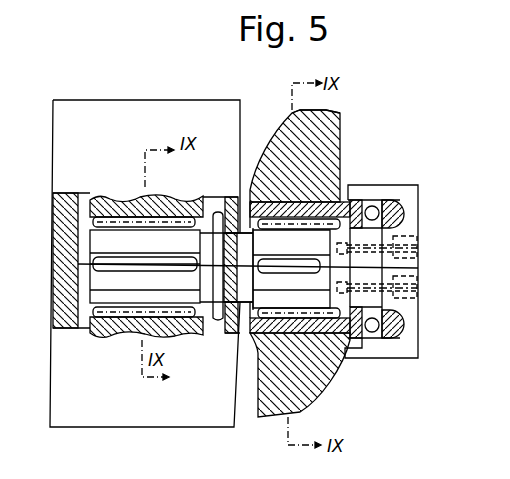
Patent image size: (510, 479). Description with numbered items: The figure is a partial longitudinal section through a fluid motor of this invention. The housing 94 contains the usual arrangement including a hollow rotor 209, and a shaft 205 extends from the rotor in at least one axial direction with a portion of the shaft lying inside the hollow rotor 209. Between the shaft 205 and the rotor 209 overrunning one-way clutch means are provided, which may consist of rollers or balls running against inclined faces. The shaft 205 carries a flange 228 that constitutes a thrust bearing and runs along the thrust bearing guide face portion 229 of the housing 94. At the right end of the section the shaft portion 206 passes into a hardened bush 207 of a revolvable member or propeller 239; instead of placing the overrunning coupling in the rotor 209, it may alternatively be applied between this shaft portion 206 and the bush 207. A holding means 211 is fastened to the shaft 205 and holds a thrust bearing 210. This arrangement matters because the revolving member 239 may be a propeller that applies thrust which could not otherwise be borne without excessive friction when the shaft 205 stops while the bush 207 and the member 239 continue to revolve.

The housing 94 is at (80, 152).
The shaft 205 is at (132, 297).
The shaft portion 206 is at (263, 250).
The bush 207 is at (338, 152).
The rotor 209 is at (165, 210).
The thrust bearing 210 is at (371, 336).
The holding means 211 is at (407, 344).
The flange 228 is at (216, 322).
The thrust bearing guide face portion 229 is at (229, 333).
The revolvable member or propeller 239 is at (330, 122).